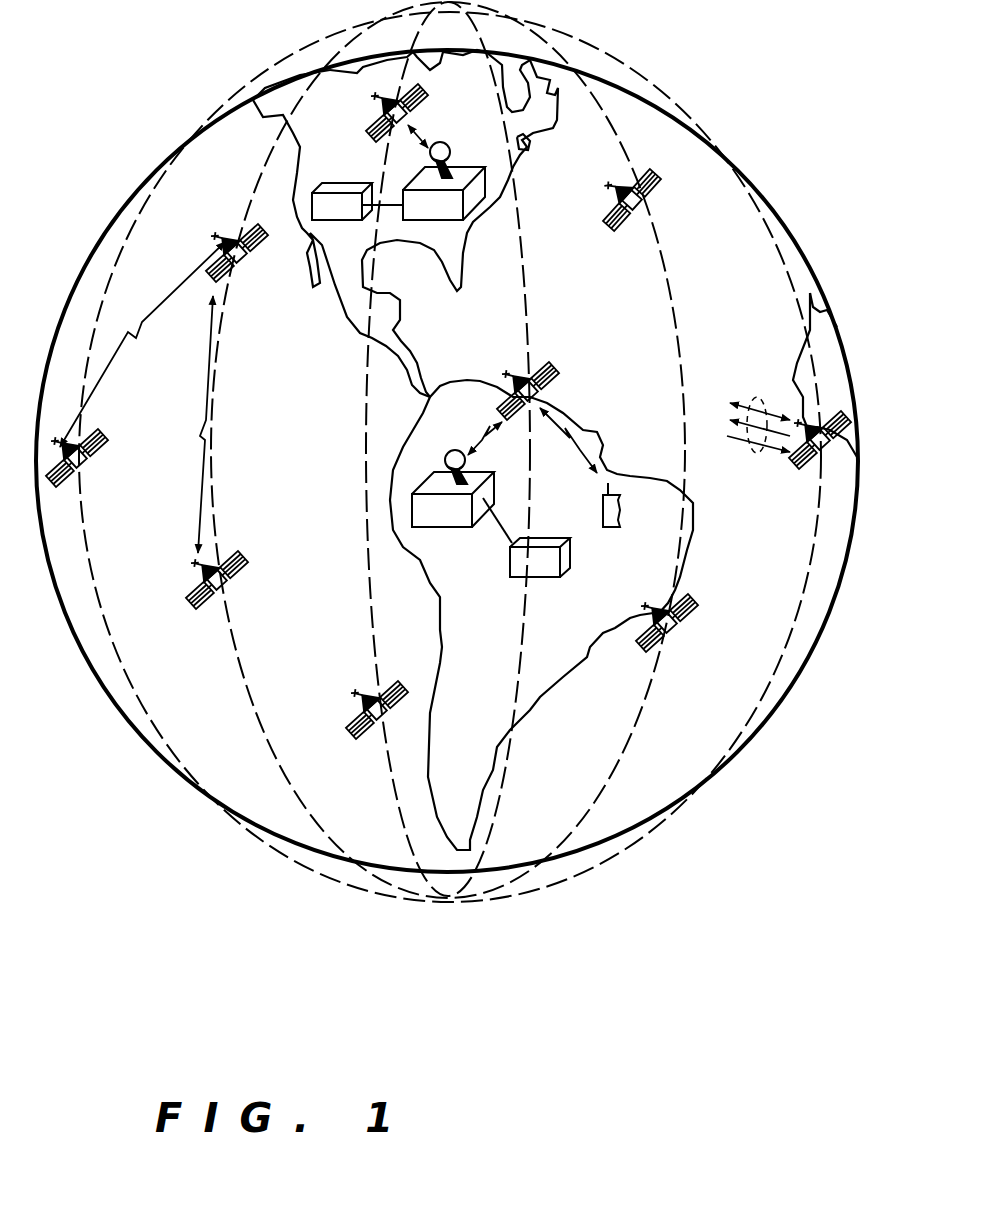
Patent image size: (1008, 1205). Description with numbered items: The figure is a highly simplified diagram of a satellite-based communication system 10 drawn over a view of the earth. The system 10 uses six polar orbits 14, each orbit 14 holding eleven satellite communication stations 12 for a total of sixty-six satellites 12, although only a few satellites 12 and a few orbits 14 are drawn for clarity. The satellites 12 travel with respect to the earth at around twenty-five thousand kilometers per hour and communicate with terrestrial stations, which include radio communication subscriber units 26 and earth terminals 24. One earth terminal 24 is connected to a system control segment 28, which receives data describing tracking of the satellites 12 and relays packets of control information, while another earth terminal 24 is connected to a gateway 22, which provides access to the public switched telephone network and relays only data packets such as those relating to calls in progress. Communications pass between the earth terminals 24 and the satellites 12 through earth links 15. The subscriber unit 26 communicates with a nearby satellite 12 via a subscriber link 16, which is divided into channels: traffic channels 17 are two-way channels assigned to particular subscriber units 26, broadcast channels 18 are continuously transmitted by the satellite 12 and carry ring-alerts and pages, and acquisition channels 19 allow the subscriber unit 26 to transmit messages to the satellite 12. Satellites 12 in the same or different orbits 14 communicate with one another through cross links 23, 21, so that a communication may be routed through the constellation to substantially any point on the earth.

The satellite-based communication system 10 is at (441, 995).
The satellite communication station 12 is at (441, 403).
The polar orbit 14 is at (458, 452).
The earth link 15 is at (484, 432).
The subscriber link 16 is at (599, 318).
The traffic channel 17 is at (748, 402).
The broadcast channel 18 is at (733, 418).
The acquisition channel 19 is at (746, 440).
The intra-plane cross-link 21 is at (202, 462).
The gateway 22 is at (545, 578).
The cross link 23 is at (137, 330).
The earth terminal 24 is at (449, 348).
The subscriber unit 26 is at (612, 530).
The system control segment 28 is at (323, 222).